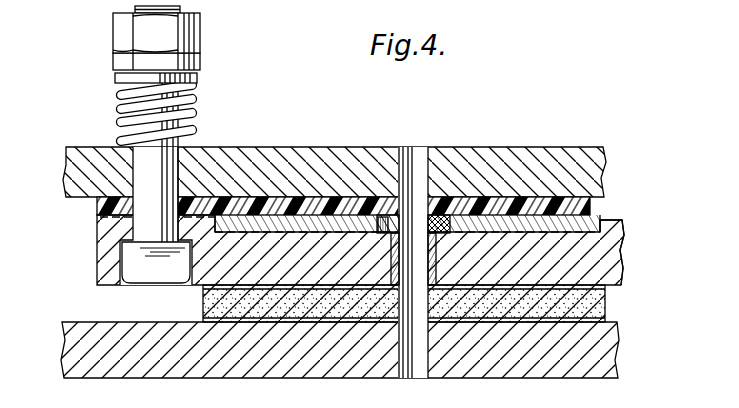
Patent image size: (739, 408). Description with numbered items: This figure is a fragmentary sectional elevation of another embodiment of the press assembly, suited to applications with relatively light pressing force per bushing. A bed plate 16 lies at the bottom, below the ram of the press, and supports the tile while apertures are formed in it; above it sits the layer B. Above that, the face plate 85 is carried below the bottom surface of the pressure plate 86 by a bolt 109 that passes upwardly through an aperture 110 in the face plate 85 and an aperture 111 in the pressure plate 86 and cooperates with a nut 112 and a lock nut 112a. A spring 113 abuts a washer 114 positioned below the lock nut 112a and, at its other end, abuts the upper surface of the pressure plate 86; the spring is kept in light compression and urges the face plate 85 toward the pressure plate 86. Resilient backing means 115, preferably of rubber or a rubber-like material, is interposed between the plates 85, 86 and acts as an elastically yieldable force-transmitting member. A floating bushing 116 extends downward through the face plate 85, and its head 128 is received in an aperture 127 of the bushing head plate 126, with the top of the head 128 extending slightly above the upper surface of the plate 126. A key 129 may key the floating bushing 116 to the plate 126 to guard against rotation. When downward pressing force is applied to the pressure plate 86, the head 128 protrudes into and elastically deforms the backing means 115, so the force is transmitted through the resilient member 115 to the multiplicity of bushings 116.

The nut 112 is at (118, 25).
The lock nut 112a is at (118, 55).
The washer 114 is at (118, 79).
The spring 113 is at (121, 95).
The aperture 111 is at (135, 157).
The bolt 109 is at (140, 180).
The aperture 110 is at (140, 230).
The face plate 85 is at (97, 257).
The pressure plate 86 is at (272, 147).
The key 129 is at (380, 216).
The head 128 is at (442, 224).
The aperture 127 is at (465, 212).
The resilient backing means 115 is at (592, 207).
The bushing head plate 126 is at (612, 225).
The bonding layer B is at (608, 308).
The bed plate 16 is at (600, 358).
The floating bushing 116 is at (437, 266).